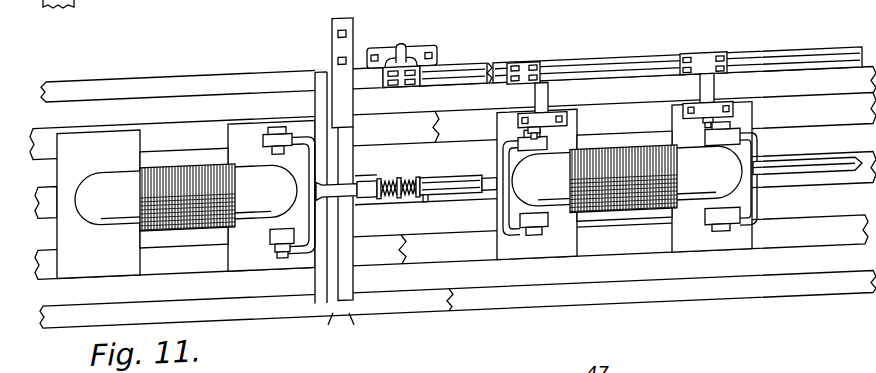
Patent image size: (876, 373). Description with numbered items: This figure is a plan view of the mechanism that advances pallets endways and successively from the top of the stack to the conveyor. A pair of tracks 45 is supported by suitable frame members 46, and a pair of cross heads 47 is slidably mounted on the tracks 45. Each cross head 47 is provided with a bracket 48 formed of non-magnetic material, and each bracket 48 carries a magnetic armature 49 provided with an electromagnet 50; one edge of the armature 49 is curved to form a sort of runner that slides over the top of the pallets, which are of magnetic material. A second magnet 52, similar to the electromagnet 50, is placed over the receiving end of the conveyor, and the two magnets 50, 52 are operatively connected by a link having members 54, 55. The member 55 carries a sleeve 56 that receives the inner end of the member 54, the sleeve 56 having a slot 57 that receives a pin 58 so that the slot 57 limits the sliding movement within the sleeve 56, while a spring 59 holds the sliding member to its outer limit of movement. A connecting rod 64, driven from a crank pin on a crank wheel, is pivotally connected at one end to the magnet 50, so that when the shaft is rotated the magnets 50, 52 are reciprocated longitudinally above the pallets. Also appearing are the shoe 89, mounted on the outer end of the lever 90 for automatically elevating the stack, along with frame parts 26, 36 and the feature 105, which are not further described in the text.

The frame bar 26 is at (412, 323).
The rod 36 is at (711, 85).
The tracks 45 is at (459, 82).
The frame members 46 is at (402, 67).
The cross heads 47 is at (531, 92).
The bracket 48 is at (536, 120).
The magnetic armature 49 is at (740, 142).
The electromagnet 50 is at (627, 178).
The second magnet 52 is at (186, 197).
The link member 54 is at (343, 215).
The link member 55 is at (493, 217).
The sleeve 56 is at (455, 196).
The slot 57 is at (410, 196).
The pin 58 is at (424, 220).
The spring 59 is at (393, 196).
The connecting rod 64 is at (807, 157).
The shoe 89 is at (346, 120).
The lever 90 is at (356, 54).
The slot 105 is at (343, 328).